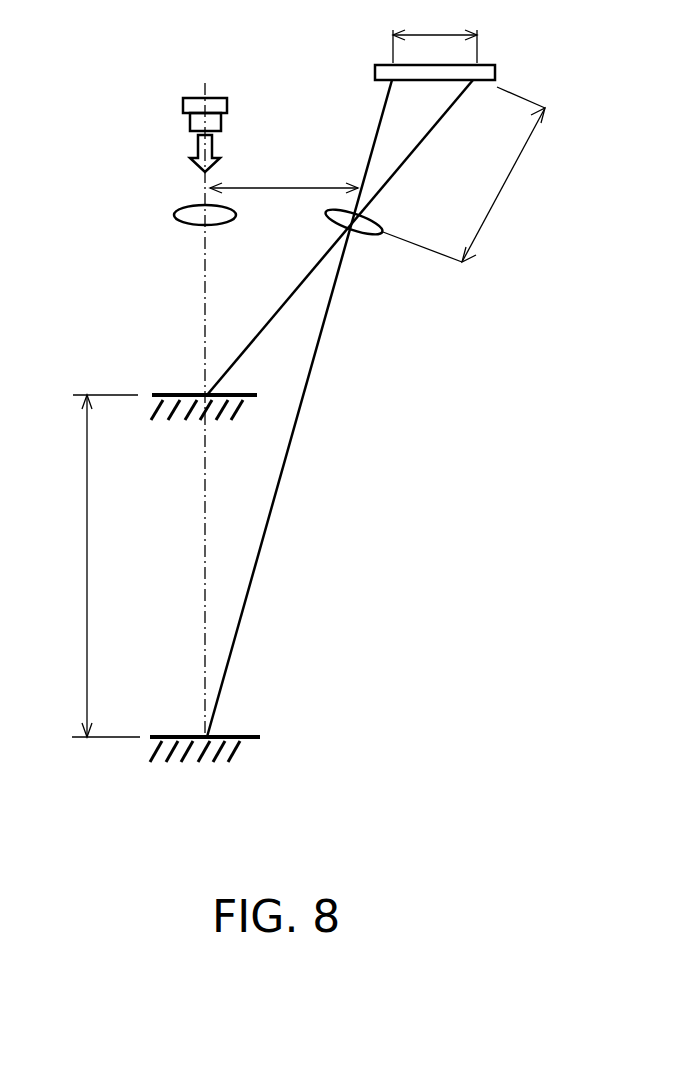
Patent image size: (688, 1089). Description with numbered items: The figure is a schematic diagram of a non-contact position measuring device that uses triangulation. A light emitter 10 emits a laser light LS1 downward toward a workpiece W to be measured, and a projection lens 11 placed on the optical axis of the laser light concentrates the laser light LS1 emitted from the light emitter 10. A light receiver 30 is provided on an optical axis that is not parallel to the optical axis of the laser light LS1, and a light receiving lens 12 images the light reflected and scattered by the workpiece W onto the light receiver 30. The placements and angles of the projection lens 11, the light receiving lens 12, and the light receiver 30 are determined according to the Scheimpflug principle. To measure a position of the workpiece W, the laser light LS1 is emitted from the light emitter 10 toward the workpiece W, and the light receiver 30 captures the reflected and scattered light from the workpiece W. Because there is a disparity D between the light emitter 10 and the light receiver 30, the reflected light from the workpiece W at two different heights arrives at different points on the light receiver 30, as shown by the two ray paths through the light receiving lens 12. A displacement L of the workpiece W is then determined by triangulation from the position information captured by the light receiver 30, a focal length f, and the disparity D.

The light emitter 10 is at (195, 104).
The laser light LS1 is at (202, 150).
The projection lens 11 is at (193, 217).
The light receiving lens 12 is at (375, 233).
The light receiver 30 is at (375, 75).
The workpiece W is at (168, 395).
The disparity D is at (284, 175).
The displacement L is at (95, 566).
The focal length f is at (464, 174).